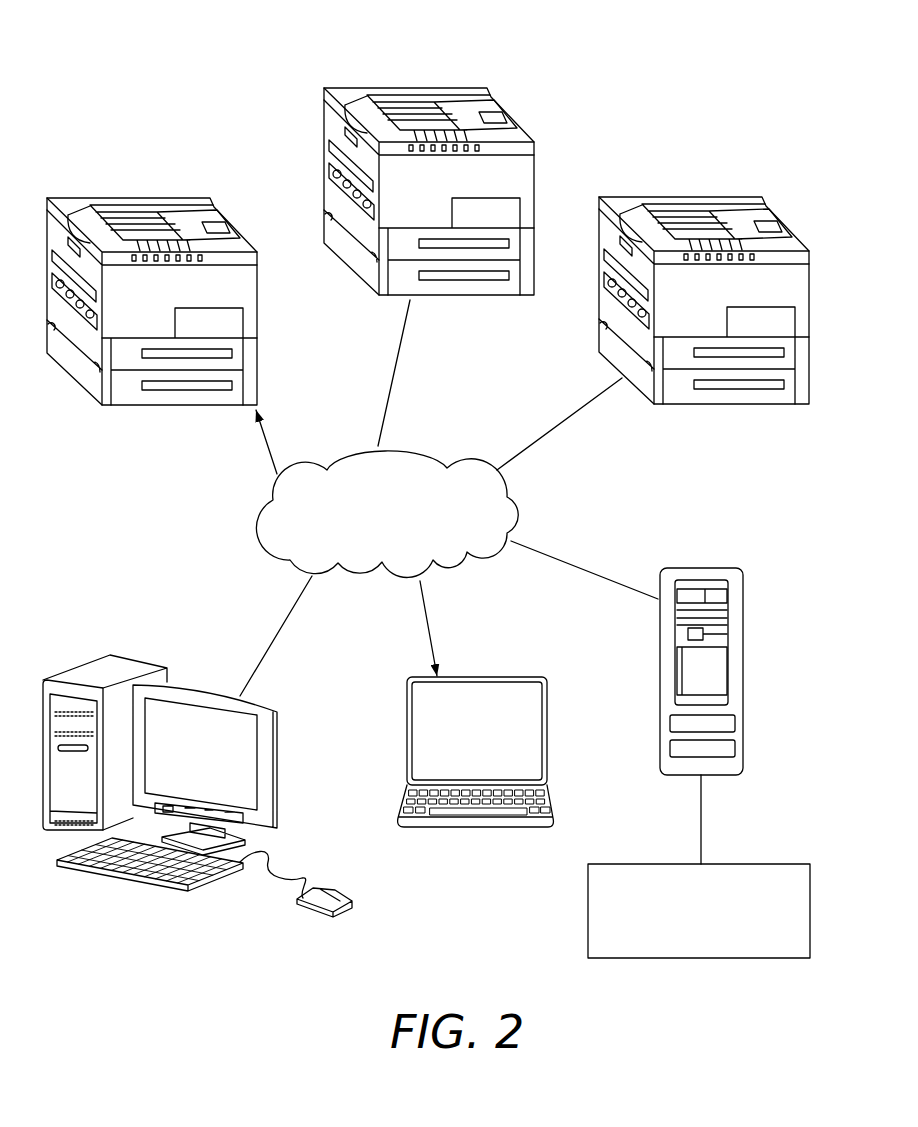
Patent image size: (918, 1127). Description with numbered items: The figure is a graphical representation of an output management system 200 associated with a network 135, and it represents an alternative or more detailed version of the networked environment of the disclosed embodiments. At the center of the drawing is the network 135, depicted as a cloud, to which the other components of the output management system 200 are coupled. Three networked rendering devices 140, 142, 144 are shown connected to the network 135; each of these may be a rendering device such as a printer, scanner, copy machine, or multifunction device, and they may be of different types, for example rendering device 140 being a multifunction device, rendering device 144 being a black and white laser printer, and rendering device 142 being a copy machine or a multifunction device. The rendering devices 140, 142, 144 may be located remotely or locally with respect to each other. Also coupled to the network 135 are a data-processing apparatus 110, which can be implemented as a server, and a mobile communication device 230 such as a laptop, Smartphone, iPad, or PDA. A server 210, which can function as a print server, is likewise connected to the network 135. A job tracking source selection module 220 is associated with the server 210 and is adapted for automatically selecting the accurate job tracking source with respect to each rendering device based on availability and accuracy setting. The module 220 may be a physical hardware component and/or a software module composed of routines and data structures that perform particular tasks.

The output management system 200 is at (606, 62).
The networked rendering device 140 is at (407, 87).
The networked rendering device 142 is at (146, 197).
The networked rendering device 144 is at (725, 195).
The network 135 is at (414, 452).
The data-processing apparatus 110 is at (187, 690).
The mobile communication device 230 is at (472, 674).
The server 210 is at (744, 690).
The job tracking source selection module 220 is at (753, 863).